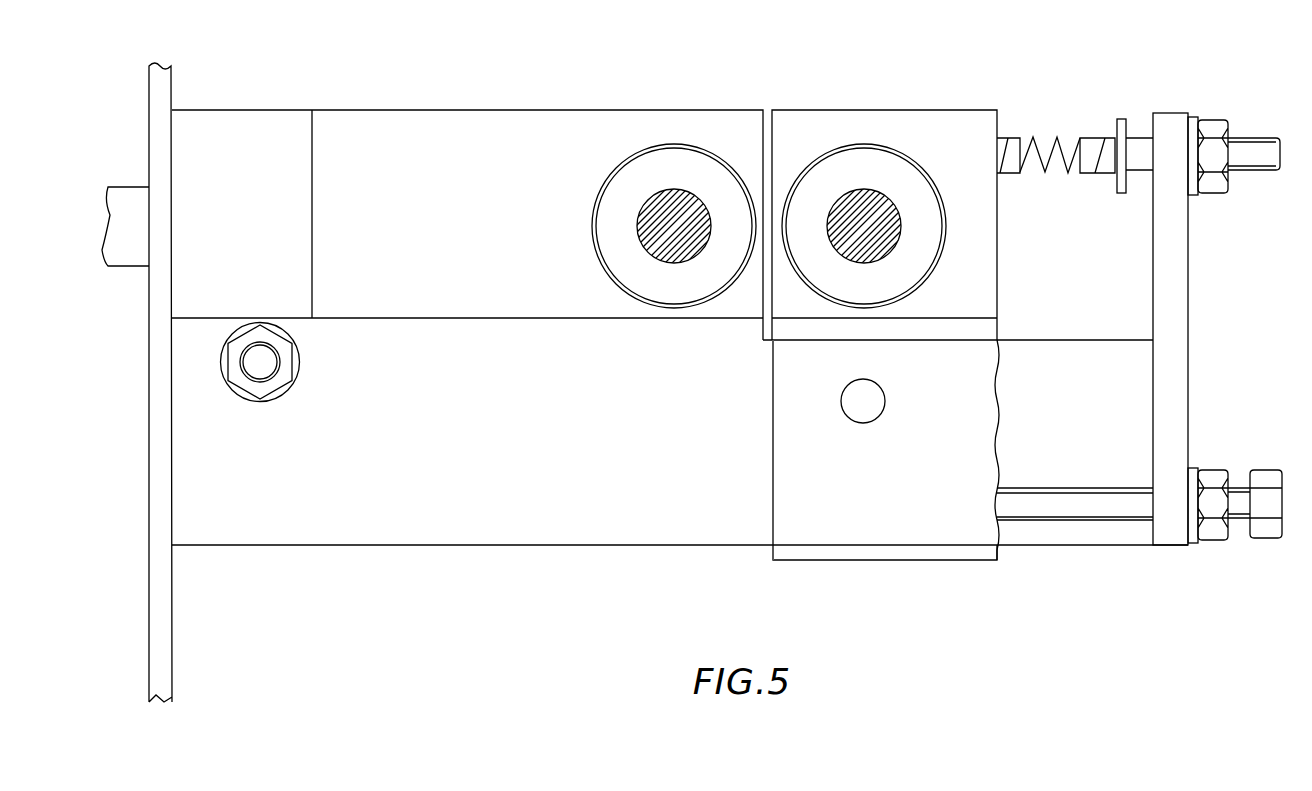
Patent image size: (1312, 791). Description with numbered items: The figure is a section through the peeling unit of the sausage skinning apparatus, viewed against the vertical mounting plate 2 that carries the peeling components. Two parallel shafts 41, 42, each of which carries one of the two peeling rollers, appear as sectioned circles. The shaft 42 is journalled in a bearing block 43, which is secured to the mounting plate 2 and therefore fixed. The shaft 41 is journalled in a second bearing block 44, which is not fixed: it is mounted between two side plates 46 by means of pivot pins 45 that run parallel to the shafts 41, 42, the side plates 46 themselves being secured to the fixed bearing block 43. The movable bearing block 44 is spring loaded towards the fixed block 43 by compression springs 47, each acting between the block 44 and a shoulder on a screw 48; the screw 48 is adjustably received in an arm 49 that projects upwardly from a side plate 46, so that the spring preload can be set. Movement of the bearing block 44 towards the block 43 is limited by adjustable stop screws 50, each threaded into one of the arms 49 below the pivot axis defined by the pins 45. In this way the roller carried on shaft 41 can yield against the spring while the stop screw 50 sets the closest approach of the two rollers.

The mounting plate 2 is at (165, 653).
The shaft 41 is at (888, 238).
The shaft 42 is at (648, 237).
The bearing block 43 is at (719, 122).
The bearing block 44 is at (875, 120).
The pivot pin 45 is at (857, 413).
The side plate 46 is at (1080, 355).
The compression spring 47 is at (1040, 142).
The screw 48 is at (1138, 145).
The arm 49 is at (1175, 270).
The stop screw 50 is at (1068, 500).